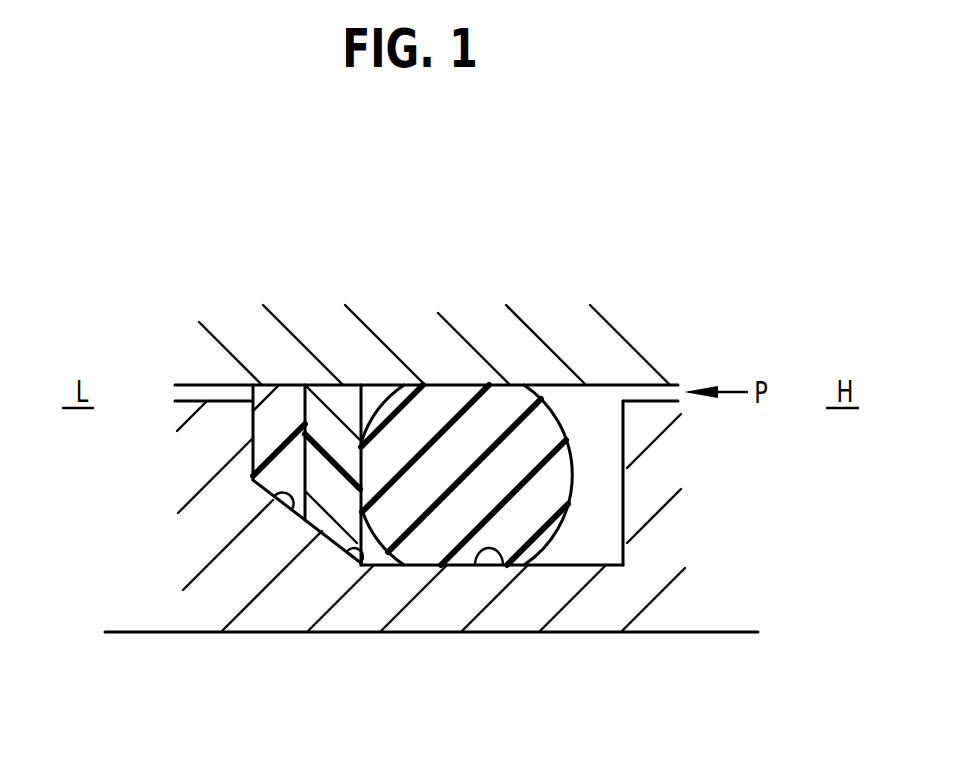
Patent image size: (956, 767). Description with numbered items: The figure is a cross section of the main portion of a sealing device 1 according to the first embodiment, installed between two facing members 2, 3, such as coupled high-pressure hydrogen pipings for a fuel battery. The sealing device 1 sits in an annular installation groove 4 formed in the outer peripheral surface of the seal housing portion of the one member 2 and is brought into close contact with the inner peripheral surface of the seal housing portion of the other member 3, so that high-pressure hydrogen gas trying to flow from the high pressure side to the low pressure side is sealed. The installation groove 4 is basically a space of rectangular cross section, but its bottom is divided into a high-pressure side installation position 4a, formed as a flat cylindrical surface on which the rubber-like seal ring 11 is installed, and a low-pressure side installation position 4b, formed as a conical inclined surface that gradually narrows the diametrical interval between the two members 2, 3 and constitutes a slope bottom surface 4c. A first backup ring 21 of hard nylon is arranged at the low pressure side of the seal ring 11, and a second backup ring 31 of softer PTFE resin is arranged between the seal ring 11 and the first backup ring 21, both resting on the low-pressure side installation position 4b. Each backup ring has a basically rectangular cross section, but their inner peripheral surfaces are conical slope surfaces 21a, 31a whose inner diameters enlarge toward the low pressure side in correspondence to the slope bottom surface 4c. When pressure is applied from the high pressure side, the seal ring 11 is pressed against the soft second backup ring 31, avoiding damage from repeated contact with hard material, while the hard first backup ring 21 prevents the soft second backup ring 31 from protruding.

The sealing device 1 is at (203, 380).
The one member 2 is at (464, 560).
The other member 3 is at (608, 360).
The installation groove 4 is at (476, 560).
The high-pressure side installation position 4a is at (518, 642).
The low-pressure side installation position 4b is at (369, 568).
The slope bottom surface 4c is at (287, 508).
The seal ring 11 is at (498, 408).
The first backup ring 21 is at (170, 396).
The slope surface 21a is at (73, 525).
The second backup ring 31 is at (369, 468).
The slope surface 31a is at (308, 638).